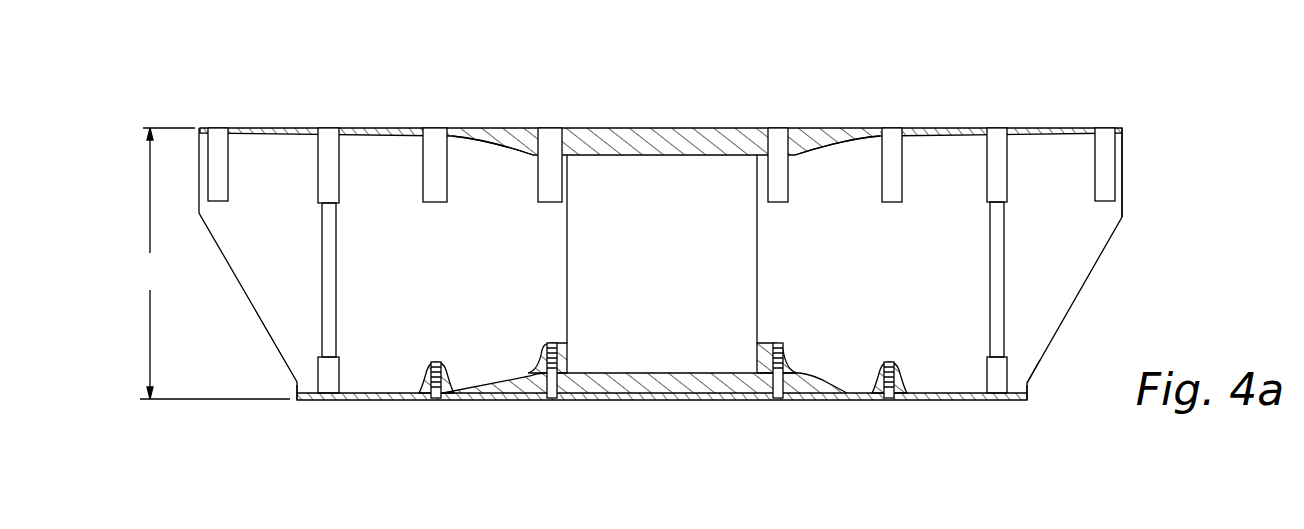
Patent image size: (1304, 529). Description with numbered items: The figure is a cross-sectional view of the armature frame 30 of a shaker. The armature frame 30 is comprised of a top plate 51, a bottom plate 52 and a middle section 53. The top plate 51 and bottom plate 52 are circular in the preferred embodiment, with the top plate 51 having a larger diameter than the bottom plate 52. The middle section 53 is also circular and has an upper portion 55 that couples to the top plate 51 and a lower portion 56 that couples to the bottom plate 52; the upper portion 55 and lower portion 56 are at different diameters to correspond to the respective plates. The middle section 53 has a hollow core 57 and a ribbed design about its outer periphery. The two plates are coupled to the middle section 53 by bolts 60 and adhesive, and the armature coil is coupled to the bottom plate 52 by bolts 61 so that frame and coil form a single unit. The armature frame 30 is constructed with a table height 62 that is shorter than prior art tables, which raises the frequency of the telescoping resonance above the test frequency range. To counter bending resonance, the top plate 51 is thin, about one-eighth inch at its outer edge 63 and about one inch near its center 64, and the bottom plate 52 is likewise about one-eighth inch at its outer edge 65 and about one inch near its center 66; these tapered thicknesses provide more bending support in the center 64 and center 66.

The armature frame 30 is at (1095, 270).
The top plate 51 is at (943, 128).
The bottom plate 52 is at (967, 397).
The middle section 53 is at (275, 290).
The upper portion 55 is at (1122, 160).
The lower portion 56 is at (1030, 382).
The hollow core 57 is at (697, 172).
The bolts 60 is at (433, 128).
The bolts 61 is at (338, 255).
The table height 62 is at (215, 263).
The outer edge 63 is at (200, 128).
The center 64 is at (655, 128).
The outer edge 65 is at (300, 396).
The center 66 is at (655, 397).